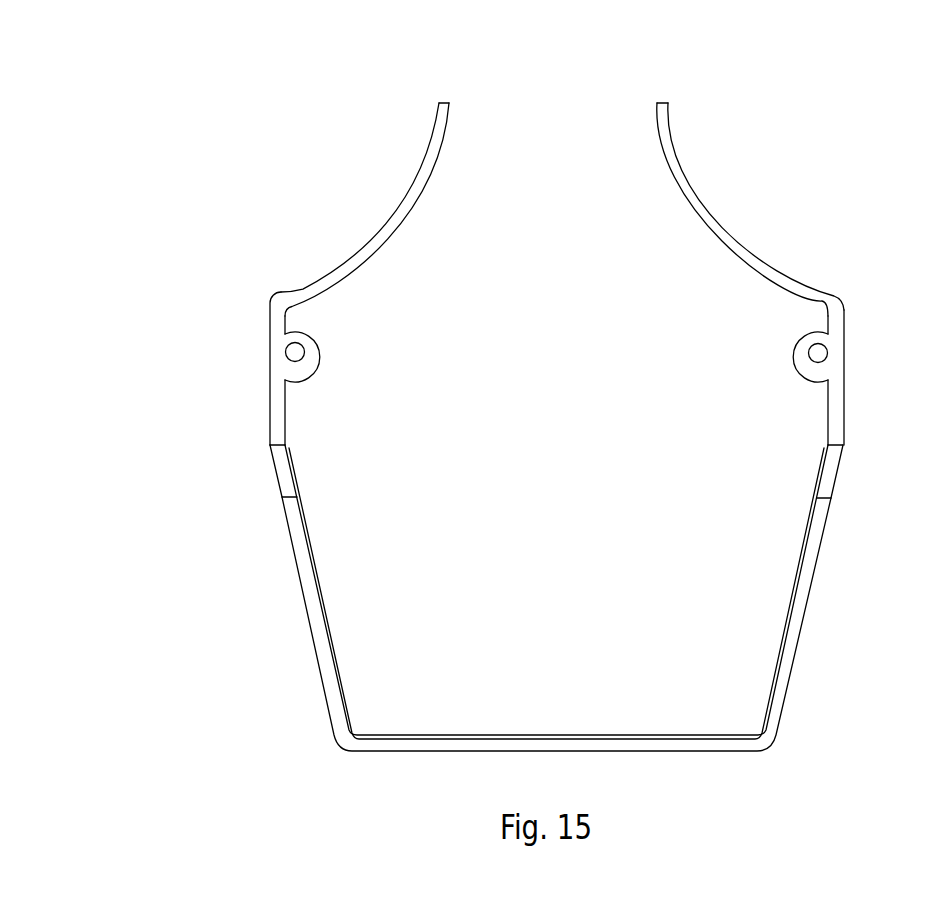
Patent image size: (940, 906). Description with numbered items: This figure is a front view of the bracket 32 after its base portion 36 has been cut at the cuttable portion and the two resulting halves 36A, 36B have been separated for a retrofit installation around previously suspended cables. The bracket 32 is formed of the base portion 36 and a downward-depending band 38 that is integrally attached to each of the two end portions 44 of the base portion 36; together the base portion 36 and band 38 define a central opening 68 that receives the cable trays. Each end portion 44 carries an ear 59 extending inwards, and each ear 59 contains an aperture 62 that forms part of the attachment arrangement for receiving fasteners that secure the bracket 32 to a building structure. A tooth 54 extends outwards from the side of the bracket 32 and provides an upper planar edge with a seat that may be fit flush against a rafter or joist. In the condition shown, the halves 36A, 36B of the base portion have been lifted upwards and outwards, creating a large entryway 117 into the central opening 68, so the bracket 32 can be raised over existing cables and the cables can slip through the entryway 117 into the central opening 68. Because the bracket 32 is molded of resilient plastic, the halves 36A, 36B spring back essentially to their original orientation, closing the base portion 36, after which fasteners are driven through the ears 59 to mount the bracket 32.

The bracket 32 is at (113, 194).
The base portion 36 is at (384, 246).
The first half of the base portion 36A is at (433, 163).
The second half of the base portion 36B is at (687, 192).
The downward-depending band 38 is at (807, 613).
The end portions 44 is at (270, 377).
The tooth 54 is at (277, 458).
The ears 59 is at (302, 368).
The apertures 62 is at (295, 351).
The central opening 68 is at (525, 518).
The entryway 117 is at (545, 140).